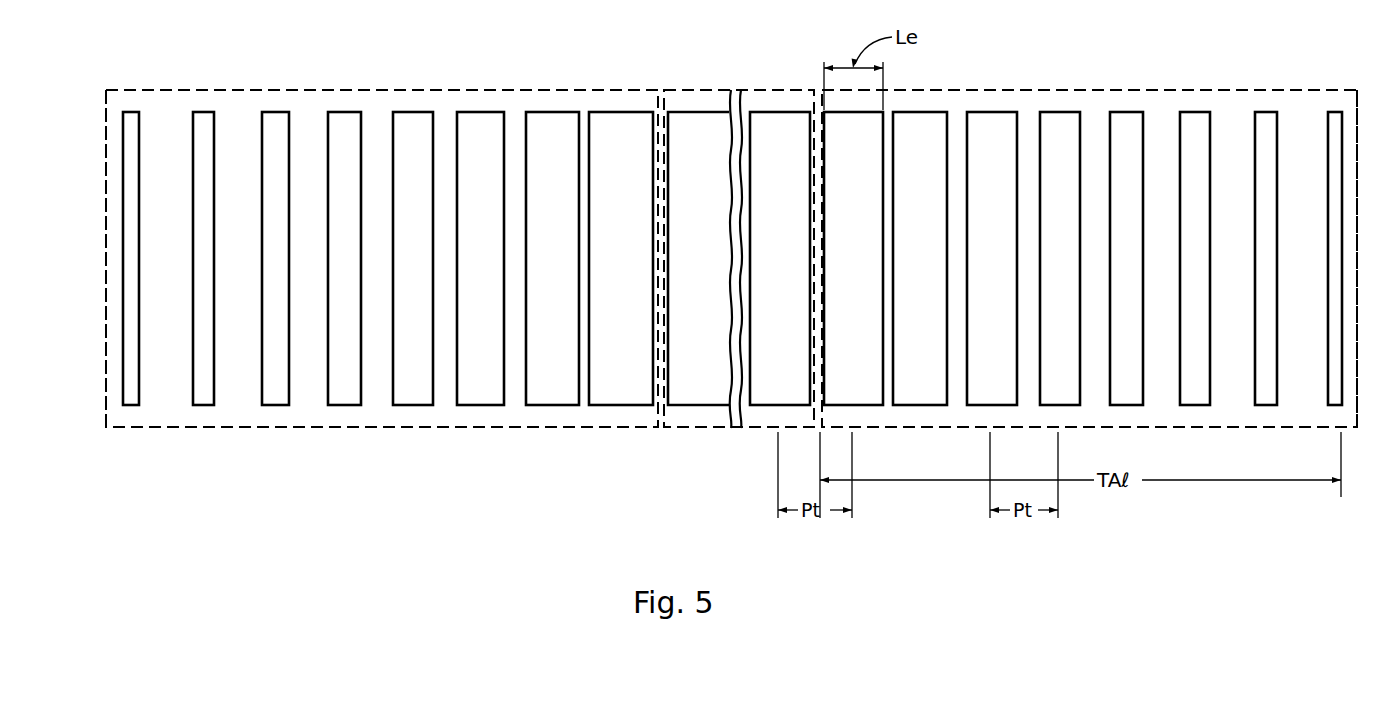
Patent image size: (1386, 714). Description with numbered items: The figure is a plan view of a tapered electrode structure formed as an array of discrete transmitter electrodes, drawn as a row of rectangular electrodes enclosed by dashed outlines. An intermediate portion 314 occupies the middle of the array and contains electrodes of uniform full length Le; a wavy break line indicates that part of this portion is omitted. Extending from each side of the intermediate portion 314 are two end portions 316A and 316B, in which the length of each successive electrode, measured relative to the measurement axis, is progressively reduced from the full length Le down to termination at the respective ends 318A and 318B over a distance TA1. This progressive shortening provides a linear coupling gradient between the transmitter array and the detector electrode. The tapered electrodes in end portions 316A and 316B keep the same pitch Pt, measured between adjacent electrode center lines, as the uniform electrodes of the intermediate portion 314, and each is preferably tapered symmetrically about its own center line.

The intermediate portion 314 is at (739, 240).
The end portion 316A is at (382, 239).
The end portion 316B is at (1089, 237).
The end 318A is at (125, 277).
The end 318B is at (1346, 237).